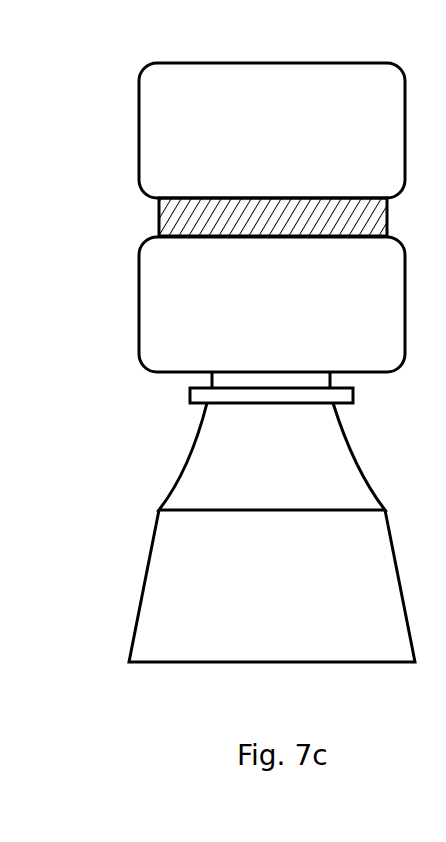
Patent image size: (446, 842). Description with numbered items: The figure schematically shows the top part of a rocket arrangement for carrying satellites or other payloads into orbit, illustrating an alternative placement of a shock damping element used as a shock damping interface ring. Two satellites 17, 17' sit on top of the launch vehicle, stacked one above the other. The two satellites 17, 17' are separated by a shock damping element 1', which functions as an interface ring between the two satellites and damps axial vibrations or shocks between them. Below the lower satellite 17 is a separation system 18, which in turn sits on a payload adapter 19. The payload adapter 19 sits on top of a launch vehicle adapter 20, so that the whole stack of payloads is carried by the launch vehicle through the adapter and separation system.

The satellite 17' is at (223, 130).
The shock damping element 1' is at (225, 216).
The satellite 17 is at (223, 304).
The separation system 18 is at (188, 397).
The payload adapter 19 is at (180, 462).
The launch vehicle adapter 20 is at (140, 594).